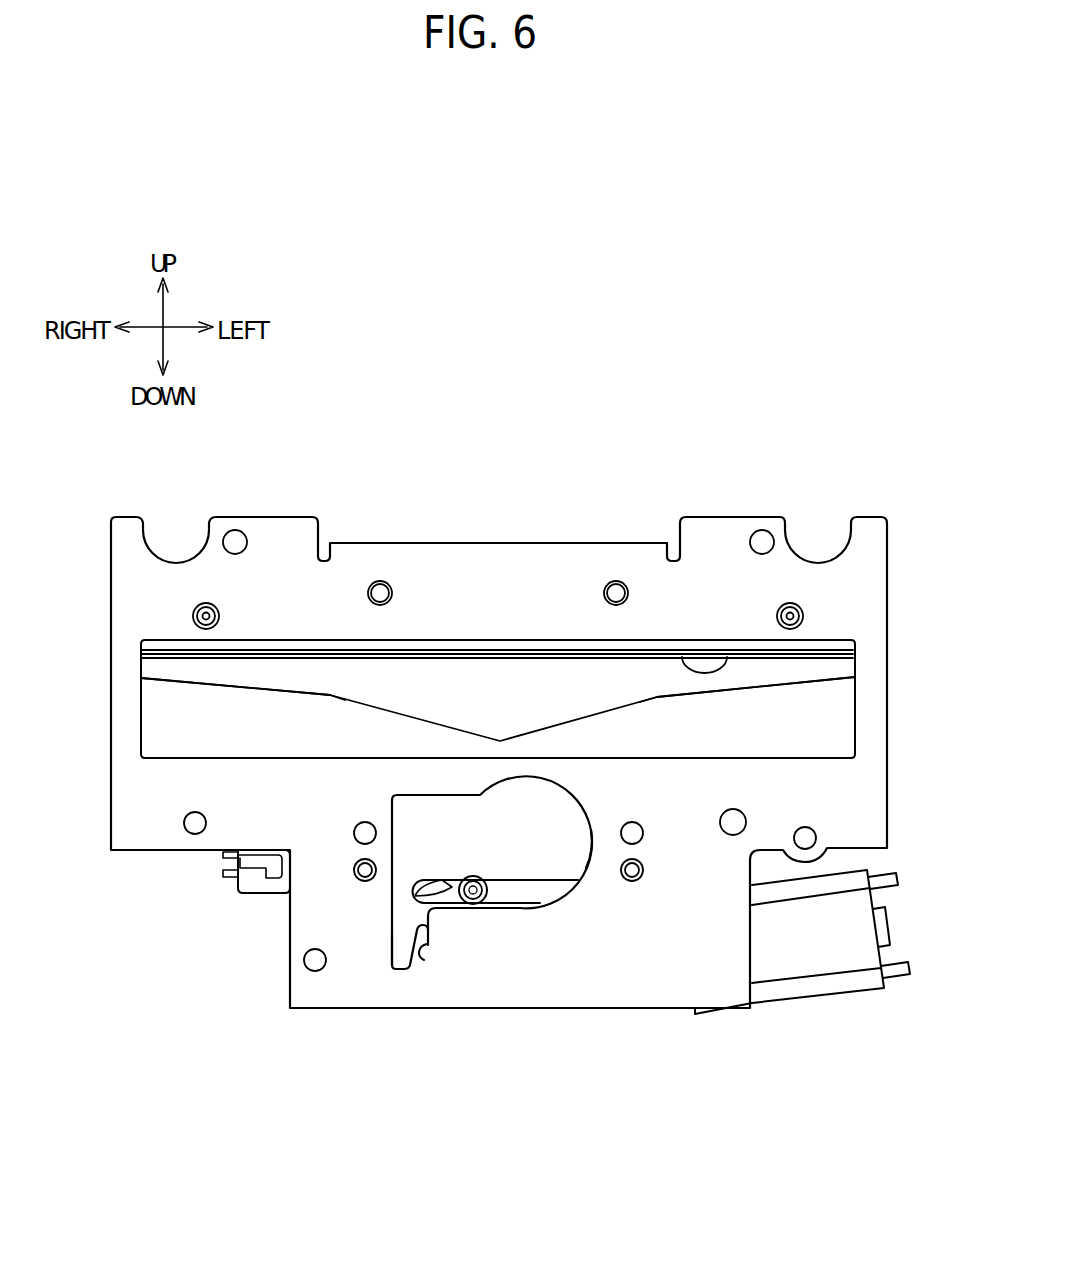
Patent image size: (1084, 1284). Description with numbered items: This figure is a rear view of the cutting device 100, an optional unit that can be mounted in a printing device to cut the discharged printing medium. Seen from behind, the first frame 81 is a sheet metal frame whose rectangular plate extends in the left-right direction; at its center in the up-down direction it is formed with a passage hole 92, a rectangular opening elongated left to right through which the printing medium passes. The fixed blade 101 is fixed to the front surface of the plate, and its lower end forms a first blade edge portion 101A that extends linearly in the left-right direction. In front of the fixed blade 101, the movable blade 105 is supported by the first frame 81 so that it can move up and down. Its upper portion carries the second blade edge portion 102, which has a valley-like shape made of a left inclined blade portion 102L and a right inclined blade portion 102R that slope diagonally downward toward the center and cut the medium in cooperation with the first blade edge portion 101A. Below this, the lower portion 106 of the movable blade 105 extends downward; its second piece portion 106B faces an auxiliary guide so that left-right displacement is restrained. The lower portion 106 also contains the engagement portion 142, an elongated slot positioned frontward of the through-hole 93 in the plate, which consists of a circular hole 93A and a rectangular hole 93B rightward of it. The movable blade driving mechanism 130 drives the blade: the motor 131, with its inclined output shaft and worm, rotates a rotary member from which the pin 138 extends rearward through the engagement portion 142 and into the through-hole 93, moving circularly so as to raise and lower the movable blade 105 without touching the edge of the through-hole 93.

The cutting device 100 is at (671, 298).
The first frame 81 is at (906, 552).
The passage hole 92 is at (852, 668).
The fixed blade 101 is at (747, 563).
The first blade edge portion 101A is at (727, 657).
The second blade edge portion 102 is at (607, 374).
The right inclined blade portion 102R is at (338, 697).
The left inclined blade portion 102L is at (655, 697).
The movable blade 105 is at (826, 737).
The lower portion 106 is at (473, 827).
The second piece portion 106B is at (400, 943).
The engagement portion 142 is at (455, 887).
The pin 138 is at (418, 893).
The through-hole 93 is at (593, 1084).
The circular hole 93A is at (590, 858).
The rectangular hole 93B is at (426, 958).
The movable blade driving mechanism 130 is at (734, 1058).
The motor 131 is at (803, 932).